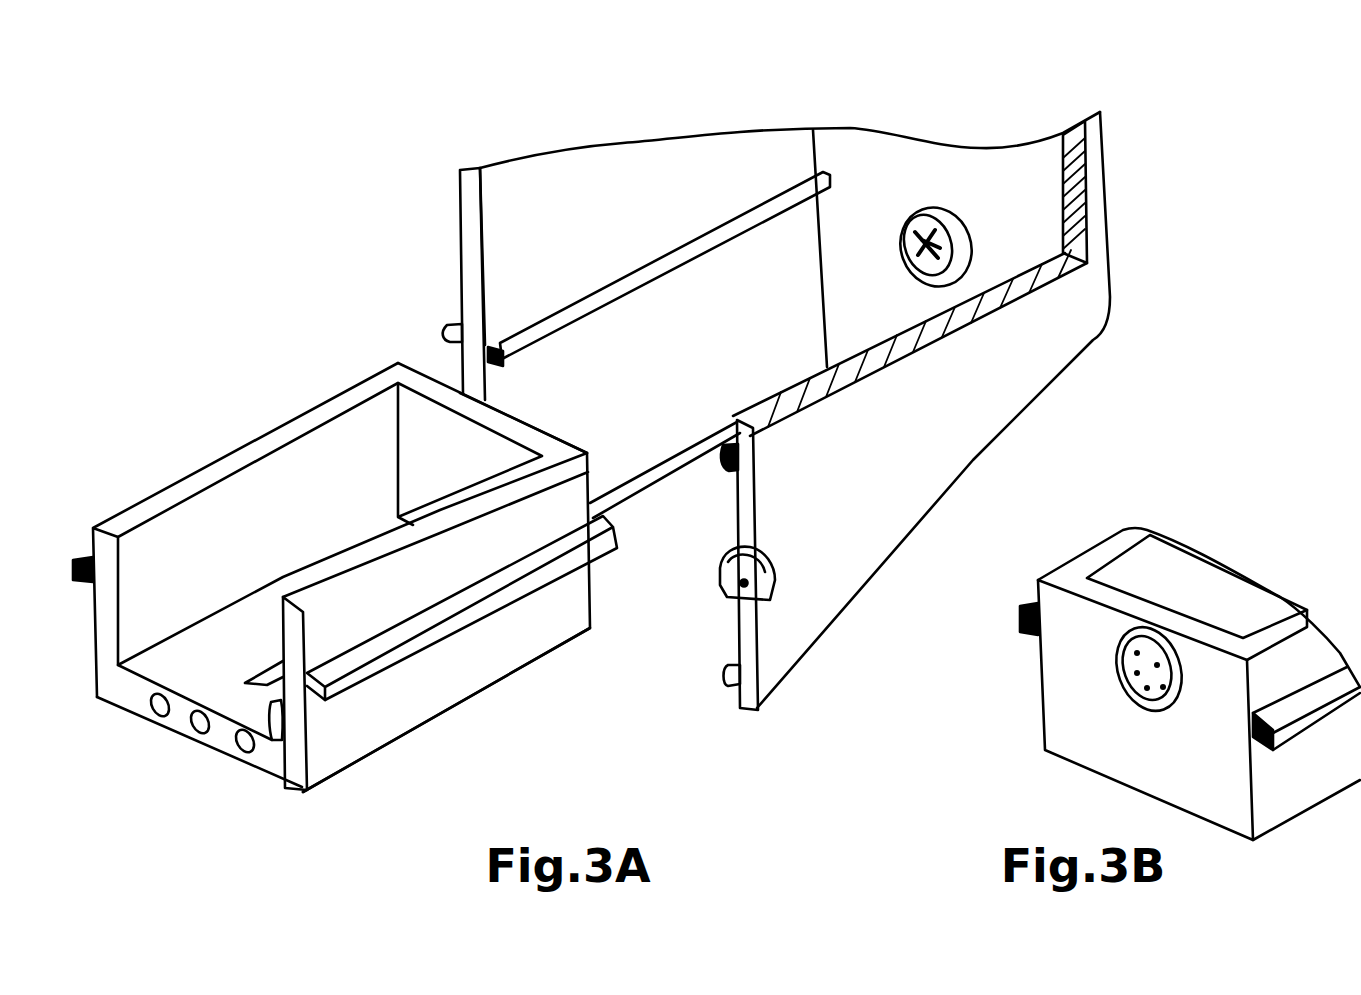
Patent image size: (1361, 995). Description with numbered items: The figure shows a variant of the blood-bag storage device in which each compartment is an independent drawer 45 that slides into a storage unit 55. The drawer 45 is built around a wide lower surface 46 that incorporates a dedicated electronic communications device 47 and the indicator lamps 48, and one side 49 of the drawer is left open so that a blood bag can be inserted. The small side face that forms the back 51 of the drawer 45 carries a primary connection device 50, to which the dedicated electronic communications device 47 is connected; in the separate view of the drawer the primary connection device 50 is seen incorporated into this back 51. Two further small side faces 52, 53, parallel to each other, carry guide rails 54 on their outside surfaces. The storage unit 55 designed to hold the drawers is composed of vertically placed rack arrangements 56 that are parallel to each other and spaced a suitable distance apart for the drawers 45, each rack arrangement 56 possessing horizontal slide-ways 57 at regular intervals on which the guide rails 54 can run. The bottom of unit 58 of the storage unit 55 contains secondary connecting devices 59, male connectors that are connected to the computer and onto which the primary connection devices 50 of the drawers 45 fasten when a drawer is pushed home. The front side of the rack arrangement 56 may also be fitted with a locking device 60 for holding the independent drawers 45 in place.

In FIG. 3A, the independent drawer 45 is at (528, 660).
In FIG. 3A, the wide lower surface 46 is at (207, 620).
In FIG. 3A, the dedicated electronic communications device 47 is at (279, 745).
In FIG. 3A, the indicator lamps 48 is at (248, 754).
In FIG. 3A, the open side 49 is at (312, 722).
In FIG. 3B, the primary connection device 50 is at (1127, 687).
In FIG. 3A, the back 51 is at (430, 377).
In FIG. 3B, the back 51 is at (1083, 602).
In FIG. 3A, the small side face 52 is at (433, 537).
In FIG. 3A, the small side face 53 is at (343, 395).
In FIG. 3A, the guide rail 54 is at (400, 655).
In FIG. 3A, the storage unit 55 is at (460, 215).
In FIG. 3A, the rack arrangement 56 is at (483, 203).
In FIG. 3A, the horizontal slide-way 57 is at (798, 187).
In FIG. 3A, the bottom of unit 58 is at (975, 156).
In FIG. 3A, the secondary connecting device 59 is at (967, 253).
In FIG. 3A, the locking device 60 is at (775, 597).